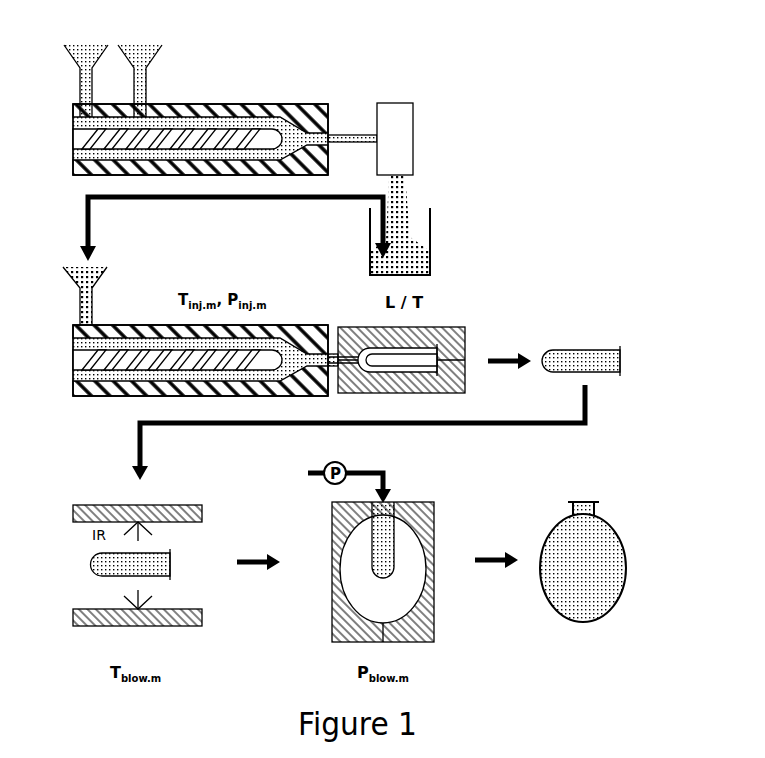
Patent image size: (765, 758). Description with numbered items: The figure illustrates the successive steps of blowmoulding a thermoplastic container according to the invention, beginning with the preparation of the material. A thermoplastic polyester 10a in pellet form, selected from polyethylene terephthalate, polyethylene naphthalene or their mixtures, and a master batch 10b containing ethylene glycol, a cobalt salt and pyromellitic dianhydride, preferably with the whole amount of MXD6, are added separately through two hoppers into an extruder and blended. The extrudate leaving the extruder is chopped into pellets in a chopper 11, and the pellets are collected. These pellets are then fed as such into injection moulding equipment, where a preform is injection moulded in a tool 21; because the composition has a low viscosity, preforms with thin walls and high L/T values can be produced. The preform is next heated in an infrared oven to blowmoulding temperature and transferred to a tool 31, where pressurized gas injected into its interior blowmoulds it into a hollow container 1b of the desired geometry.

The thermoplastic polyester 10a is at (82, 50).
The master batch 10b is at (143, 50).
The chopper 11 is at (413, 148).
The tool 21 is at (360, 327).
The tool 31 is at (434, 566).
The hollow container 1b is at (611, 487).